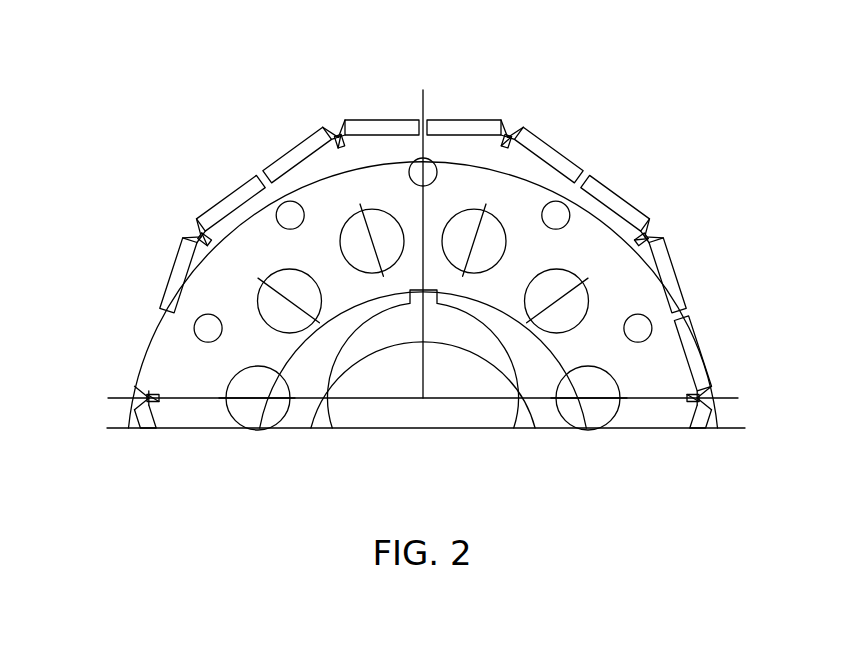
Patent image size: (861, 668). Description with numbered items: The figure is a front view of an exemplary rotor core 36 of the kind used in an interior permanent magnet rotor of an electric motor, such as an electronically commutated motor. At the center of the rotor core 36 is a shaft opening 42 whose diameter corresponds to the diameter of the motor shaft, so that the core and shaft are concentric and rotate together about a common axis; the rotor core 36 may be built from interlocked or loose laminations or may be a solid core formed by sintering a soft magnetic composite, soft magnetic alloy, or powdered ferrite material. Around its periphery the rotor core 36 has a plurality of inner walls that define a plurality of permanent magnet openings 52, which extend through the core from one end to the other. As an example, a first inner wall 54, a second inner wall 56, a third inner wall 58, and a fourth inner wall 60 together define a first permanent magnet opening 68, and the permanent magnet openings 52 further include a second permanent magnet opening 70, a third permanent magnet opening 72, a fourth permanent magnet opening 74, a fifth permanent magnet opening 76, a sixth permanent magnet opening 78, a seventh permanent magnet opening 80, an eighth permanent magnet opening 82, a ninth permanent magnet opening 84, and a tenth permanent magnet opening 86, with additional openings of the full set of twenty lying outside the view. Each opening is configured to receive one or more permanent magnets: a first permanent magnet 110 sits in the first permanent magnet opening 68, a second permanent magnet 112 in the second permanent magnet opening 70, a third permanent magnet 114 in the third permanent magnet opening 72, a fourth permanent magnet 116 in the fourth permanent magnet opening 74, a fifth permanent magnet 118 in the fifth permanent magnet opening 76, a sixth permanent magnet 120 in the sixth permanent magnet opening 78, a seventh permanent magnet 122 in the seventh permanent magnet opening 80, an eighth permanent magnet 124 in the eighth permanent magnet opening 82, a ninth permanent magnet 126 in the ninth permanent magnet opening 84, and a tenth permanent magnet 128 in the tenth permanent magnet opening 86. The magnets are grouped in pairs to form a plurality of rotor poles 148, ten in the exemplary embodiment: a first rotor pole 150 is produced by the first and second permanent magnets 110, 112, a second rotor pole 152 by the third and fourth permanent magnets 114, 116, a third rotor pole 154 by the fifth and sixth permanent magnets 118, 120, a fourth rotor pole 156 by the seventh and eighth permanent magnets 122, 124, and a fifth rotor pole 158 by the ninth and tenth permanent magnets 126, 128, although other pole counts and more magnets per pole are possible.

The rotor core 36 is at (153, 272).
The shaft opening 42 is at (499, 412).
The permanent magnet openings 52 is at (119, 236).
The first inner wall 54 is at (385, 119).
The second inner wall 56 is at (410, 136).
The third inner wall 58 is at (368, 136).
The fourth inner wall 60 is at (333, 122).
The first permanent magnet opening 68 is at (155, 330).
The second permanent magnet opening 70 is at (182, 276).
The third permanent magnet opening 72 is at (225, 198).
The fourth permanent magnet opening 74 is at (296, 150).
The fifth permanent magnet opening 76 is at (423, 95).
The sixth permanent magnet opening 78 is at (446, 130).
The seventh permanent magnet opening 80 is at (557, 156).
The eighth permanent magnet opening 82 is at (612, 196).
The ninth permanent magnet opening 84 is at (672, 281).
The tenth permanent magnet opening 86 is at (694, 342).
The first permanent magnet 110 is at (135, 392).
The second permanent magnet 112 is at (185, 225).
The third permanent magnet 114 is at (221, 208).
The fourth permanent magnet 116 is at (336, 126).
The fifth permanent magnet 118 is at (372, 118).
The sixth permanent magnet 120 is at (512, 125).
The seventh permanent magnet 122 is at (520, 138).
The eighth permanent magnet 124 is at (648, 224).
The ninth permanent magnet 126 is at (667, 250).
The tenth permanent magnet 128 is at (716, 392).
The rotor poles 148 is at (631, 45).
The first rotor pole 150 is at (113, 298).
The second rotor pole 152 is at (240, 143).
The third rotor pole 154 is at (453, 72).
The fourth rotor pole 156 is at (629, 162).
The fifth rotor pole 158 is at (737, 303).